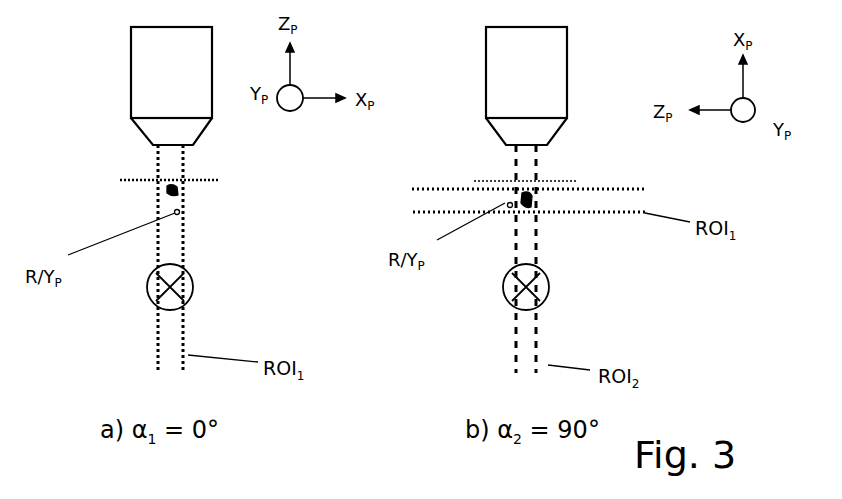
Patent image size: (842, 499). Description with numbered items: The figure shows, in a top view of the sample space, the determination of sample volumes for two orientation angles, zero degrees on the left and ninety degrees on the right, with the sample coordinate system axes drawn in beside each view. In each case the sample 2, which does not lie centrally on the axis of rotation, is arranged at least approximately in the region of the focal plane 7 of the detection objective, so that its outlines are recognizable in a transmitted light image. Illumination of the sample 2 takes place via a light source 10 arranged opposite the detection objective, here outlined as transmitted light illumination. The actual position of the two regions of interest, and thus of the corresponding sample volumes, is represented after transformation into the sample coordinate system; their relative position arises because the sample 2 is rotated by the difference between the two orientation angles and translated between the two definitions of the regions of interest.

The focal plane 7 is at (468, 178).
The sample 2 is at (160, 192).
The light source 10 is at (195, 295).